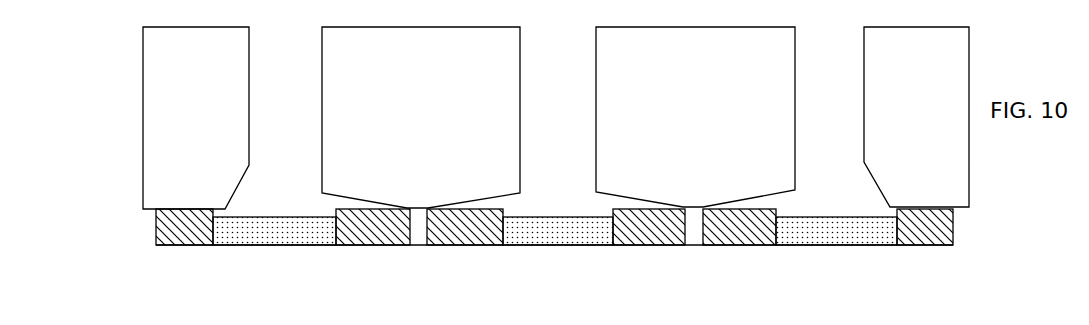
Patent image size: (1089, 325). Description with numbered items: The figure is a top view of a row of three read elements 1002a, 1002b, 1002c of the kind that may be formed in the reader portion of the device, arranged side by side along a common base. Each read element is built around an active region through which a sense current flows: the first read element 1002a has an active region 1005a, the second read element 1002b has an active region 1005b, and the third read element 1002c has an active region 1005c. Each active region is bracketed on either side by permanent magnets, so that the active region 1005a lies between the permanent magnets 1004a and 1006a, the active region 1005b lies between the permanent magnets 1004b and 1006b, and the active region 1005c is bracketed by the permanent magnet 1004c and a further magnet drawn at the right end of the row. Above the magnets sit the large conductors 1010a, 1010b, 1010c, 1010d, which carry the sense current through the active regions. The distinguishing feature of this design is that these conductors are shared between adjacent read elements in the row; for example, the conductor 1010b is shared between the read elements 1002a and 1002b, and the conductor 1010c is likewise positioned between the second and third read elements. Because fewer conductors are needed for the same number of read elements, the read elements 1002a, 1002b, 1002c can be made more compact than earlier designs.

The read element 1002a is at (305, 60).
The read element 1002b is at (584, 60).
The read element 1002c is at (852, 60).
The permanent magnet 1004a is at (158, 227).
The permanent magnet 1004b is at (473, 245).
The permanent magnet 1004c is at (758, 245).
The active region 1005a is at (259, 245).
The active region 1005b is at (577, 245).
The active region 1005c is at (857, 245).
The permanent magnet 1006a is at (380, 245).
The permanent magnet 1006b is at (665, 245).
The conductor 1010a is at (196, 118).
The conductor 1010b is at (421, 117).
The conductor 1010c is at (695, 117).
The conductor 1010d is at (916, 117).